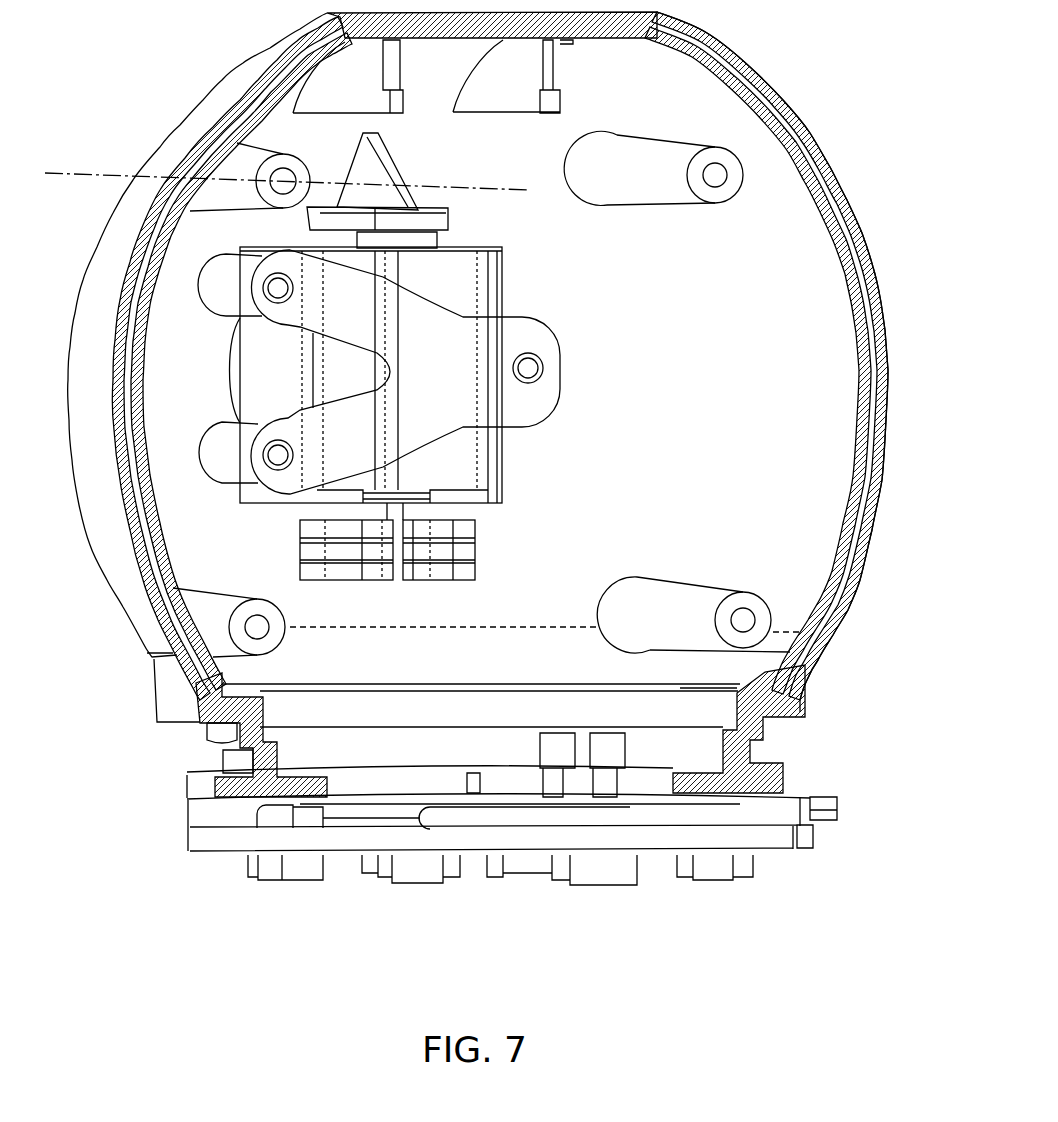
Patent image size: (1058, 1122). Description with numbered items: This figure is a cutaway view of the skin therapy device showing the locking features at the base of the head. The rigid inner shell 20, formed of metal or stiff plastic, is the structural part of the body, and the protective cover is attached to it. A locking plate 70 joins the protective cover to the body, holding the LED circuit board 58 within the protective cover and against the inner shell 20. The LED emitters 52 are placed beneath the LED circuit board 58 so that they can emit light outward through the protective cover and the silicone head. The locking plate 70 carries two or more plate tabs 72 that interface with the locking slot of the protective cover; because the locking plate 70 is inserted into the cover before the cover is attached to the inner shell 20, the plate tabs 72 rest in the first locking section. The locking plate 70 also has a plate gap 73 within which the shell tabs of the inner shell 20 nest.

The inner shell 20 is at (830, 385).
The LED emitters 52 is at (610, 867).
The LED circuit board 58 is at (767, 837).
The locking plate 70 is at (463, 817).
The plate tabs 72 is at (273, 817).
The plate gap 73 is at (368, 820).